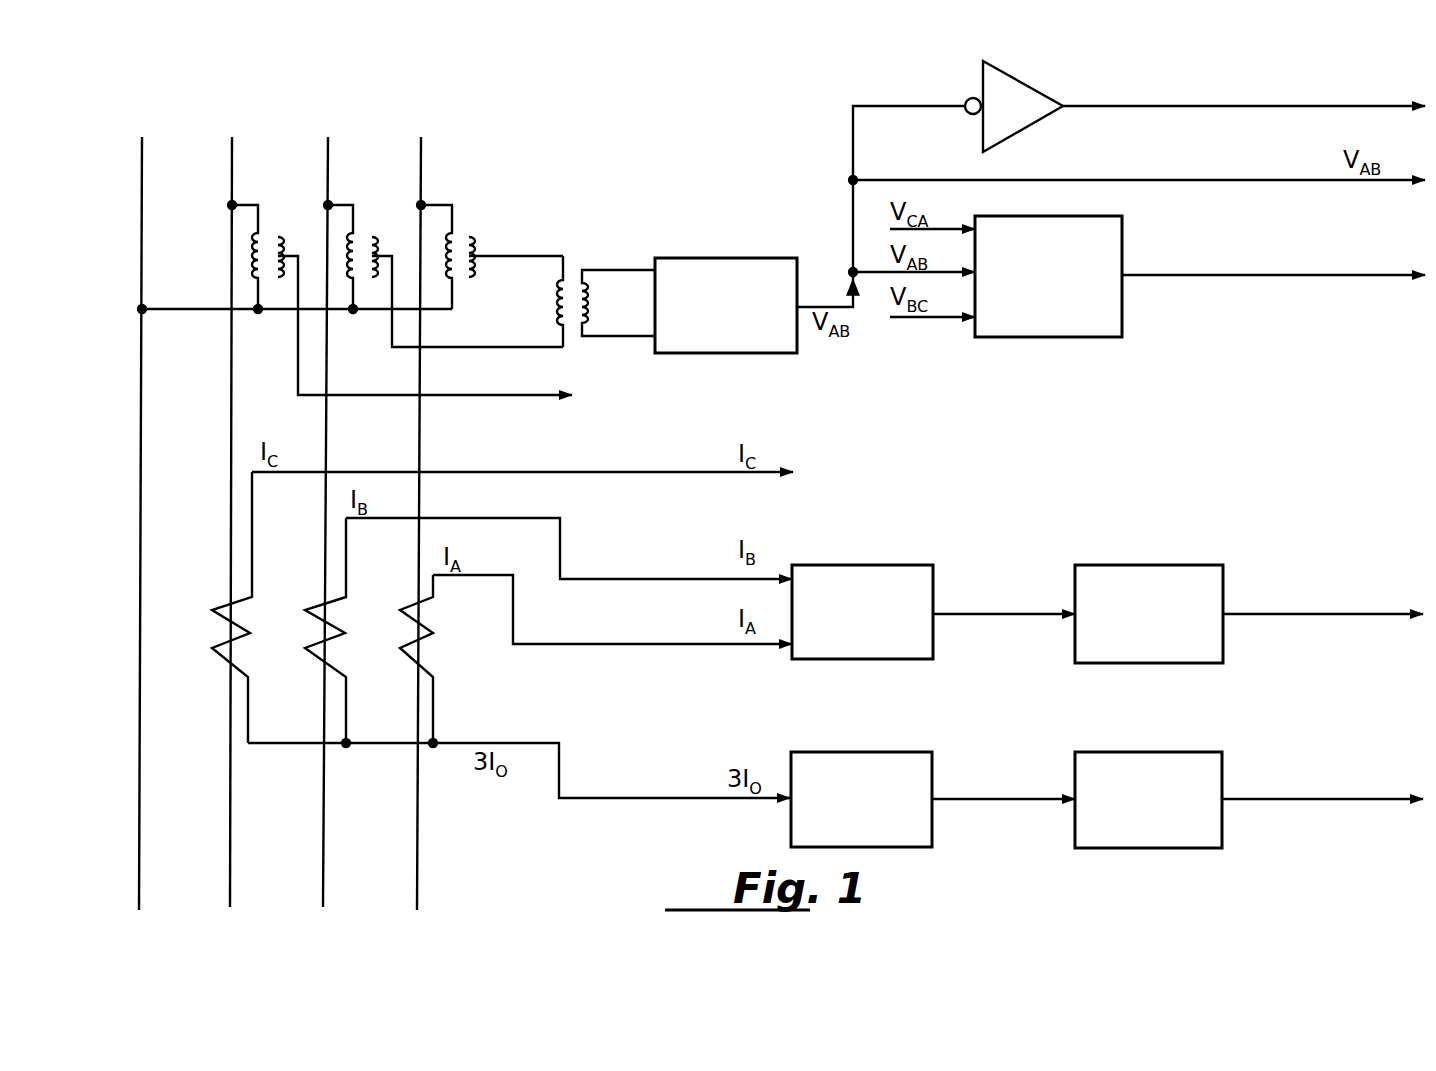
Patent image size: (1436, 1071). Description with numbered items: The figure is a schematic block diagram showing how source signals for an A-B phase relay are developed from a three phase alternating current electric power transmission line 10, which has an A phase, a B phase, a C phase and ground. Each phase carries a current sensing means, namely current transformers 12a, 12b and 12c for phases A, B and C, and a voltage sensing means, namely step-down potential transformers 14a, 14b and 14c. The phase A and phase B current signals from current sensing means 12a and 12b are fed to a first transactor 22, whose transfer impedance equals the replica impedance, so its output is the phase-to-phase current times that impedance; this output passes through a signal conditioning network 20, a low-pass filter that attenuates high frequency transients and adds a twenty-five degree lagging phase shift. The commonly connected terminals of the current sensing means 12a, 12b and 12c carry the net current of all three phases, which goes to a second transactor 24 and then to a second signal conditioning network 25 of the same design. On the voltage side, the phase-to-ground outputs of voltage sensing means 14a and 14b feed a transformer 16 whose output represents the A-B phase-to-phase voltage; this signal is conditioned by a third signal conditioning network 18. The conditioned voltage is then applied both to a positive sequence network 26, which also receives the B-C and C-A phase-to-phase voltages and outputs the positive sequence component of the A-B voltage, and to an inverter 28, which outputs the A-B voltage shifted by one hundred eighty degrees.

The three phase alternating current electric power transmission line 10 is at (135, 578).
The current sensing means 12a is at (425, 635).
The current sensing means 12b is at (327, 630).
The current sensing means 12c is at (233, 630).
The voltage sensing means 14a is at (462, 228).
The voltage sensing means 14b is at (362, 228).
The voltage sensing means 14c is at (266, 228).
The transformer 16 is at (573, 276).
The third signal conditioning network 18 is at (683, 272).
The signal conditioning network 20 is at (1185, 572).
The first transactor 22 is at (892, 577).
The second transactor 24 is at (912, 765).
The second signal conditioning network 25 is at (1197, 760).
The positive sequence network 26 is at (1108, 318).
The inverter 28 is at (1010, 88).